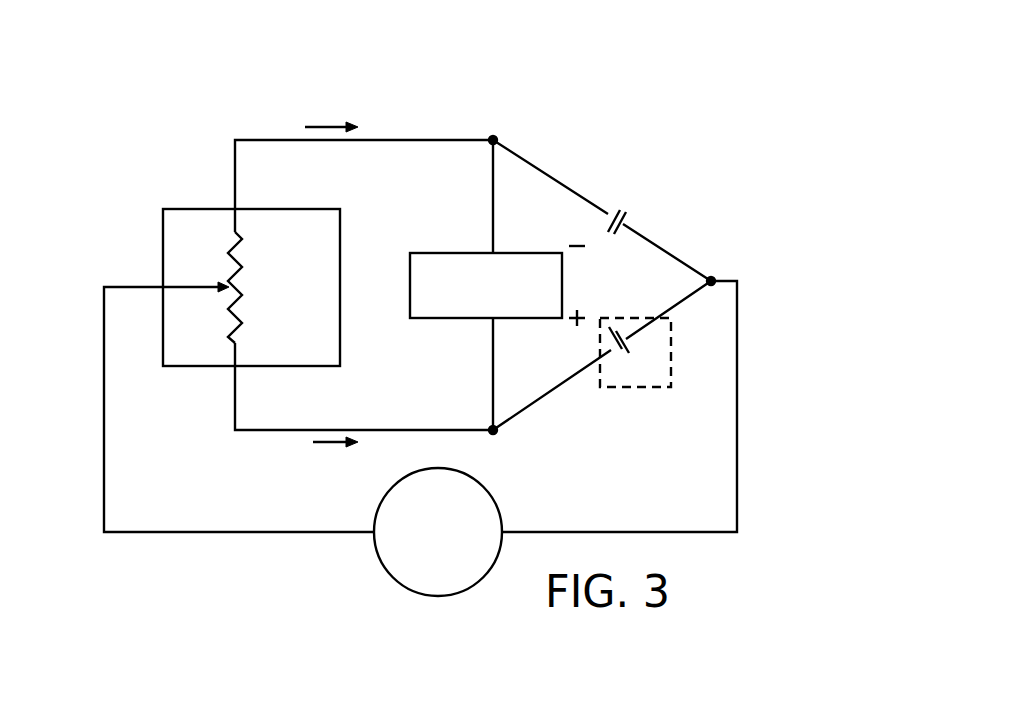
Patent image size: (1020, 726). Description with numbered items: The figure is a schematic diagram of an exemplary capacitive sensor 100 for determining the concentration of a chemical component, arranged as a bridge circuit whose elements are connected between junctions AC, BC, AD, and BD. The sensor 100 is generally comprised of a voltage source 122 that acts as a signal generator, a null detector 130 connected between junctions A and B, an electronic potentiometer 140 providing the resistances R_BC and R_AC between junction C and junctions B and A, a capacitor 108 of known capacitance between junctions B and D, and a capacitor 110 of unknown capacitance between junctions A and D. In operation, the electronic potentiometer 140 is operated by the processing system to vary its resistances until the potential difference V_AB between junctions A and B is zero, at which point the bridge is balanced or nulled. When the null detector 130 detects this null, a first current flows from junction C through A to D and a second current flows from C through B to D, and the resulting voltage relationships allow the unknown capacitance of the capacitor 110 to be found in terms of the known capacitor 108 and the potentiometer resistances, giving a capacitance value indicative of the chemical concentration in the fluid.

The sensor 100 is at (195, 142).
The electronic potentiometer 140 is at (163, 232).
The null detector 130 is at (440, 252).
The capacitor 108 is at (629, 220).
The capacitor 110 is at (628, 390).
The voltage source 122 is at (385, 568).